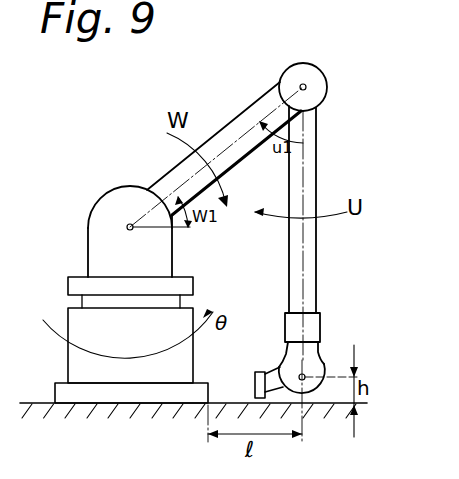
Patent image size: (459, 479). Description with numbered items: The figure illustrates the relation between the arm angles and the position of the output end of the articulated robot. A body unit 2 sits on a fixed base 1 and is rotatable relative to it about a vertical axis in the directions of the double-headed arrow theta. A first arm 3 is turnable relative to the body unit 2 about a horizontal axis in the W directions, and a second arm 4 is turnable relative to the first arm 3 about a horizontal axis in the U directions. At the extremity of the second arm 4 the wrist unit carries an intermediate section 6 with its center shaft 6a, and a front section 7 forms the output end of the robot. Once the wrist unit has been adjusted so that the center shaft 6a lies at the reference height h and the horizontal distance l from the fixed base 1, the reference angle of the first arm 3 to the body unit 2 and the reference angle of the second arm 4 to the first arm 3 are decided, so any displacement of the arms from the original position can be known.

The fixed base 1 is at (63, 395).
The body unit 2 is at (89, 237).
The first arm 3 is at (262, 97).
The second arm 4 is at (316, 262).
The intermediate section of the wrist unit 6 is at (280, 363).
The center shaft 6a is at (310, 370).
The front section of the wrist unit 7 is at (264, 371).